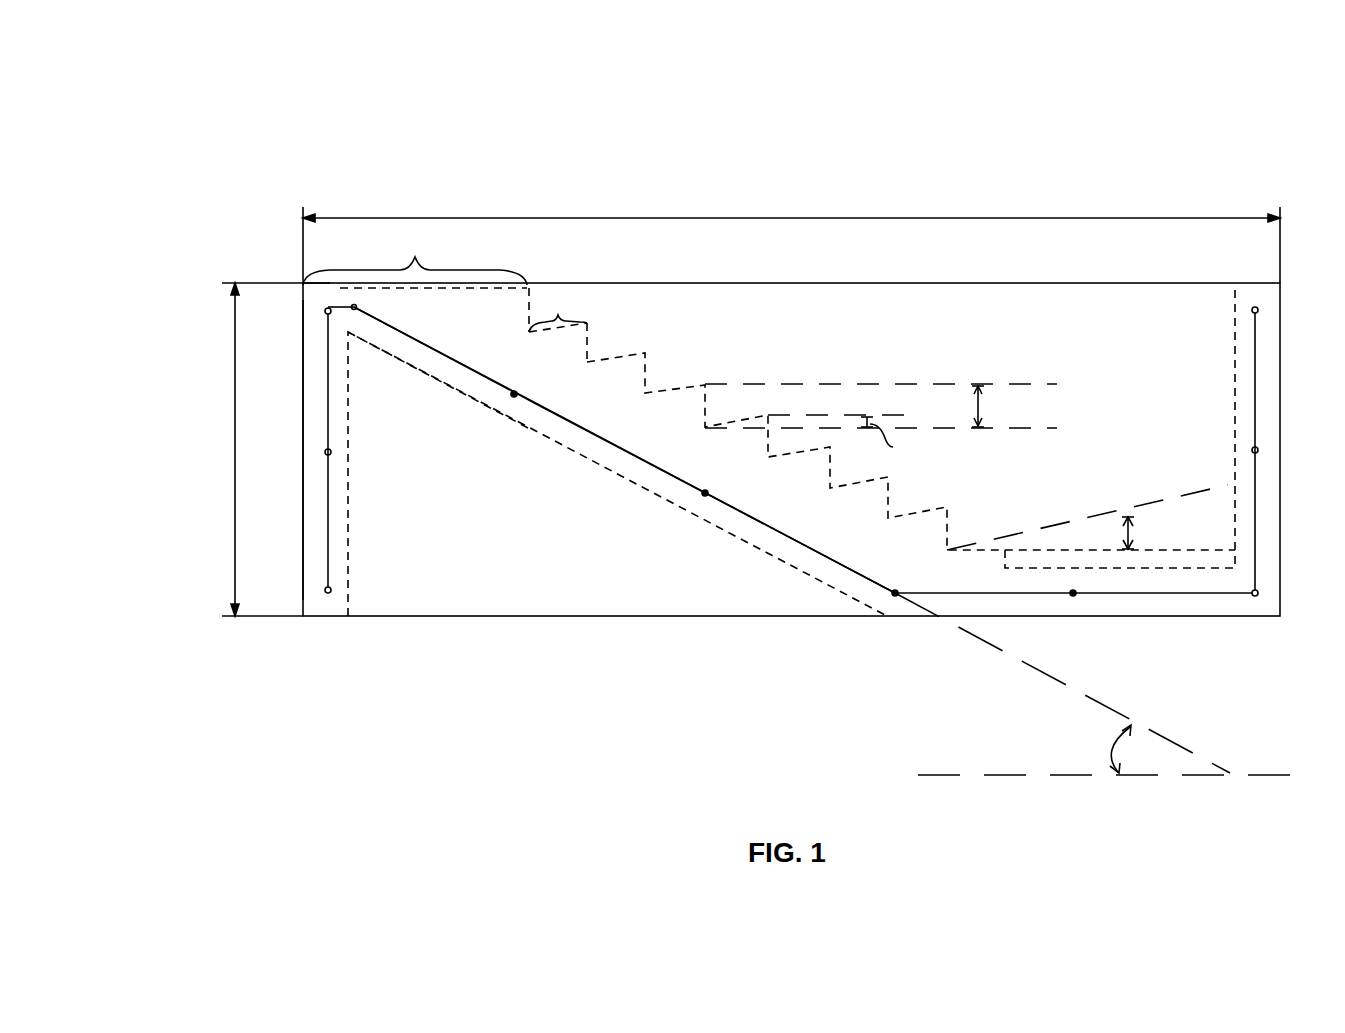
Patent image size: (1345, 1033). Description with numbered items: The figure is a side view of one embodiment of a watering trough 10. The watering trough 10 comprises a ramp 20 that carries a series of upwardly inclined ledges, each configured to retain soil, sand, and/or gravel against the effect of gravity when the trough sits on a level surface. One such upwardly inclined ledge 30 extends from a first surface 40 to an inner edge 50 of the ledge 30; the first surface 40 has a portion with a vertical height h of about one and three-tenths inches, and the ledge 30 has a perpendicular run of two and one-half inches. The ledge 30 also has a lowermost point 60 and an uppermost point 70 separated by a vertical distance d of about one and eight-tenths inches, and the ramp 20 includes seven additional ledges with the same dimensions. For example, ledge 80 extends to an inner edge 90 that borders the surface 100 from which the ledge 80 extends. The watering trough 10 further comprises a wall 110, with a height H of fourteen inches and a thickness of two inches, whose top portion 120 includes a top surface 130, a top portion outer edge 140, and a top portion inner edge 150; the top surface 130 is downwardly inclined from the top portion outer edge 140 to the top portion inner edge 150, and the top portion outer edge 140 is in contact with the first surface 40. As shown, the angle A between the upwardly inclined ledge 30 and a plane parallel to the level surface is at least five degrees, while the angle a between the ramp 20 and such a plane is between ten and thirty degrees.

The watering trough 10 is at (953, 125).
The ramp 20 is at (696, 455).
The upwardly inclined ledge 30 is at (558, 315).
The first surface 40 is at (528, 332).
The inner edge 50 is at (588, 322).
The lowermost point 60 is at (528, 332).
The uppermost point 70 is at (588, 322).
The ledge 80 is at (612, 357).
The inner edge 90 is at (590, 345).
The surface 100 is at (590, 345).
The wall 110 is at (315, 338).
The top portion 120 is at (415, 255).
The top surface 130 is at (337, 283).
The top portion outer edge 140 is at (305, 283).
The top portion inner edge 150 is at (527, 283).